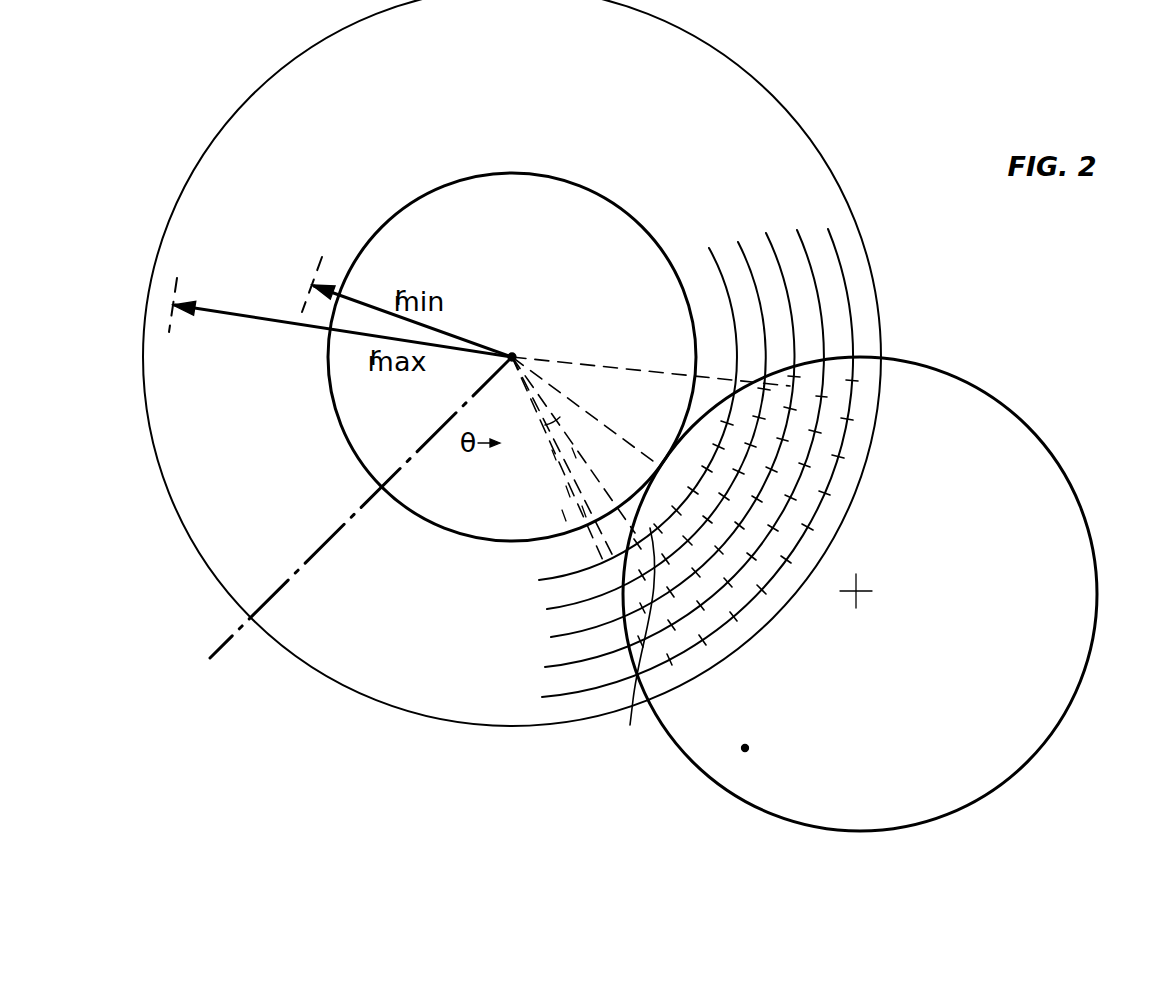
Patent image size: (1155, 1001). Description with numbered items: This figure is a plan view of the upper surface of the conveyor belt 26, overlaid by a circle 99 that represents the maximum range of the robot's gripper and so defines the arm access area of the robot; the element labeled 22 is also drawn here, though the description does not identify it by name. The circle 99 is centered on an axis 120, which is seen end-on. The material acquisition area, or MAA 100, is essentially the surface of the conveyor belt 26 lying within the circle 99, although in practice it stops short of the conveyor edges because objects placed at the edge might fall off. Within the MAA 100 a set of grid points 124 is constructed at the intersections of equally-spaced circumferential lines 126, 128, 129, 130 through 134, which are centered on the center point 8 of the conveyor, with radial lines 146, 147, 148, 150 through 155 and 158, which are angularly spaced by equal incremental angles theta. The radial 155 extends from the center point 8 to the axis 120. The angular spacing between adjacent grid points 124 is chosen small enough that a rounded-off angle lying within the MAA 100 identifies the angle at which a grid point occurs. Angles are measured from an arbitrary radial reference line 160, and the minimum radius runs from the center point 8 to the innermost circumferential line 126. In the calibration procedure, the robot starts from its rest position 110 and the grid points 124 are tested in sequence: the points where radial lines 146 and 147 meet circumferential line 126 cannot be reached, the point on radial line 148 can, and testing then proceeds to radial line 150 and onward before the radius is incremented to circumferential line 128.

The center point 8 is at (512, 352).
The disk 22 is at (830, 166).
The conveyor belt 26 is at (748, 105).
The circle 99 is at (1048, 451).
The MAA 100 is at (866, 389).
The rest position 110 is at (745, 750).
The axis 120 is at (863, 597).
The grid points 124 is at (840, 452).
The circumferential line 126 is at (712, 268).
The circumferential line 128 is at (738, 252).
The track 129 is at (770, 248).
The circumferential line 130 is at (550, 660).
The circumferential line 134 is at (826, 226).
The radial line 146 is at (570, 492).
The radial line 147 is at (585, 512).
The radial line 148 is at (575, 452).
The radial line 150 is at (545, 425).
The radial 155 is at (615, 436).
The radial line 158 is at (605, 368).
The radial reference line 160 is at (228, 643).